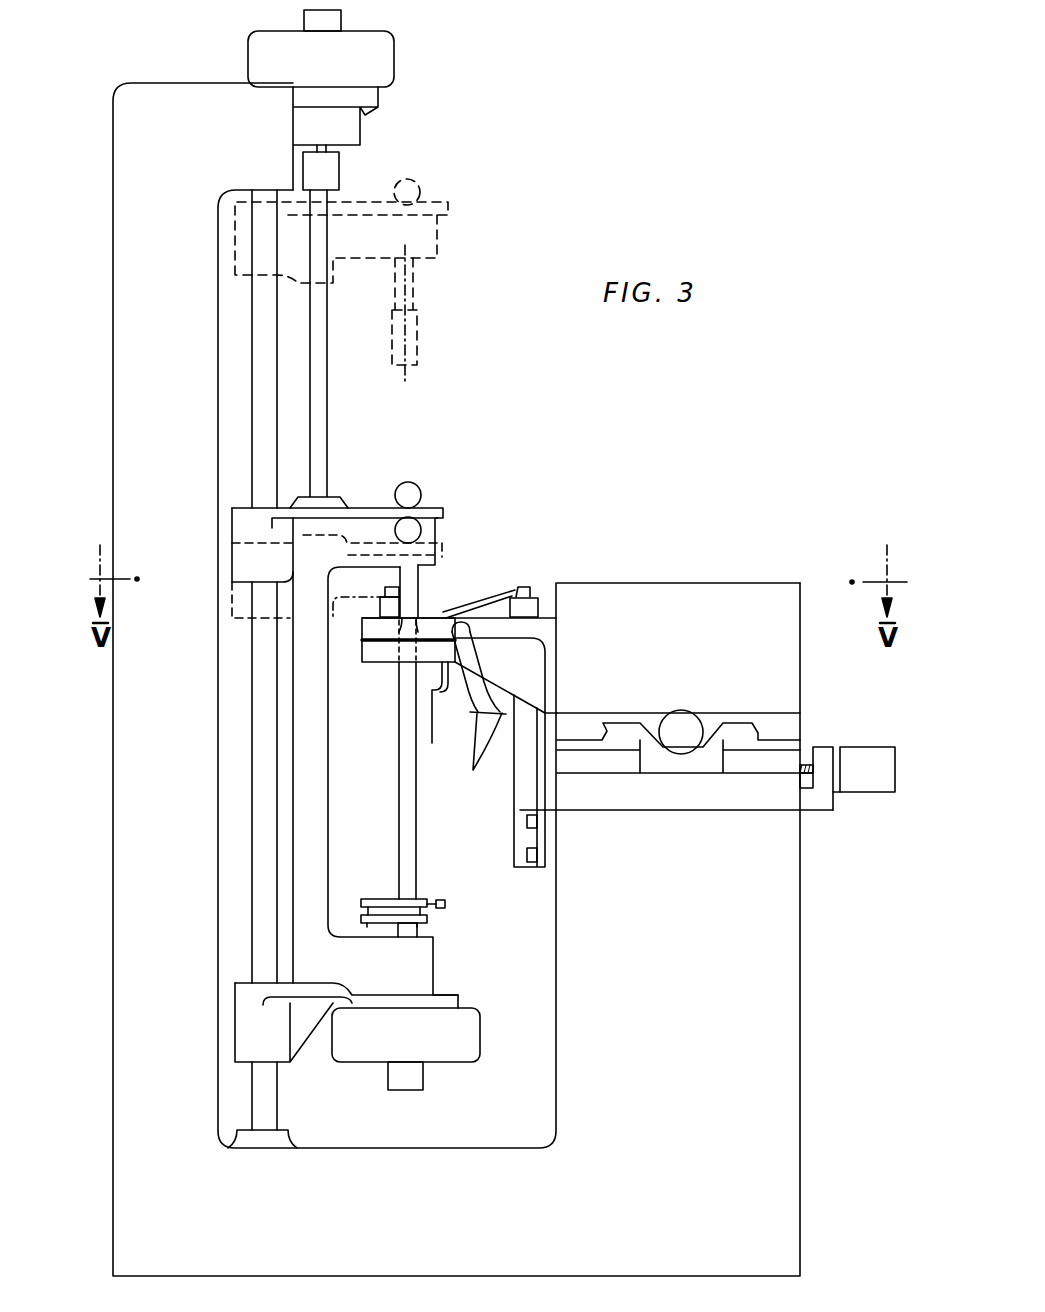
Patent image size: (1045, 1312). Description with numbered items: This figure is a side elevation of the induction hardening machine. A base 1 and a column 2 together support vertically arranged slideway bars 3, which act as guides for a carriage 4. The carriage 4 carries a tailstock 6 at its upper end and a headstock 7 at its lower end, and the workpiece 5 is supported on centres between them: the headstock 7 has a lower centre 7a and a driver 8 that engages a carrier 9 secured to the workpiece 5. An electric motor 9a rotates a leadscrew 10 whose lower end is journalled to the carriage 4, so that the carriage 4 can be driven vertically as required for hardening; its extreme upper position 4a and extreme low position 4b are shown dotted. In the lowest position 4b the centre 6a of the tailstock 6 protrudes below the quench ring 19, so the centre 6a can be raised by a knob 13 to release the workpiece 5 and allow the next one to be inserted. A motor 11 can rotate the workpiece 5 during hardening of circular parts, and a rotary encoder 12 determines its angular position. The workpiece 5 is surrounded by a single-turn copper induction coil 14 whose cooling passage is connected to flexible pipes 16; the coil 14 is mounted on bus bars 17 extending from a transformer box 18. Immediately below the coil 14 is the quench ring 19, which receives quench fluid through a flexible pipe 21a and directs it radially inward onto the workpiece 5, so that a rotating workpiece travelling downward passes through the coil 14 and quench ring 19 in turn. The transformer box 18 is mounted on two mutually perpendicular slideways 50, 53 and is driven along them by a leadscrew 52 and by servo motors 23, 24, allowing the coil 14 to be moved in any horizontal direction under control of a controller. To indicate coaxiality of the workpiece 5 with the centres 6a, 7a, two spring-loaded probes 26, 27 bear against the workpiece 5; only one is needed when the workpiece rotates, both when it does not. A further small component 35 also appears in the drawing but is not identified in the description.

The base 1 is at (128, 1237).
The column 2 is at (357, 669).
The slideway bars 3 is at (273, 402).
The carriage 4 is at (232, 517).
The extreme upper position 4a is at (448, 236).
The extreme low position 4b is at (233, 618).
The workpiece 5 is at (412, 847).
The tailstock 6 is at (425, 532).
The centre 6a is at (437, 587).
The headstock 7 is at (424, 972).
The lower centre 7a is at (421, 930).
The driver 8 is at (422, 915).
The carrier 9 is at (424, 897).
The electric motor 9a is at (385, 53).
The leadscrew 10 is at (327, 440).
The motor 11 is at (472, 1038).
The rotary encoder 12 is at (424, 1080).
The knob 13 is at (422, 492).
The induction coil 14 is at (375, 680).
The flexible pipes 16 is at (479, 711).
The bus bars 17 is at (537, 650).
The transformer box 18 is at (783, 628).
The quench ring 19 is at (385, 655).
The flexible pipe 21a is at (449, 721).
The servo motor 23 is at (676, 722).
The servo motor 24 is at (867, 783).
The probe 26 is at (508, 590).
The probe 27 is at (362, 620).
The clip 35 is at (520, 842).
The slideway 50 is at (758, 763).
The leadscrew 52 is at (803, 760).
The slideway 53 is at (768, 713).